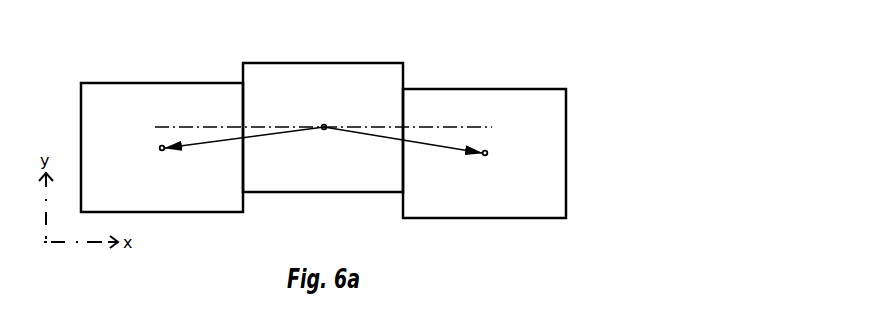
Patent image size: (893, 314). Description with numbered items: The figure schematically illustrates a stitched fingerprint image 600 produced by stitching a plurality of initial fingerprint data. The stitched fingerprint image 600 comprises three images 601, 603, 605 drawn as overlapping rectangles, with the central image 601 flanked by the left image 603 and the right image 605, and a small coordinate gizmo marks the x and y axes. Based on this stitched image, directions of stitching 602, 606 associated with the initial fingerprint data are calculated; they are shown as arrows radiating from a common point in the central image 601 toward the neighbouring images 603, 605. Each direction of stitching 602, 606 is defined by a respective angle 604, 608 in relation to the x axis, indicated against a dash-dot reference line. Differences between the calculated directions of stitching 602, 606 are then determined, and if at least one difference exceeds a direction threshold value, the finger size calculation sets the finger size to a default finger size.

The stitched fingerprint image 600 is at (453, 42).
The image 601 is at (243, 72).
The direction of stitching 602 is at (197, 144).
The image 603 is at (81, 103).
The angle 604 is at (217, 141).
The image 605 is at (495, 89).
The direction of stitching 606 is at (440, 146).
The angle 608 is at (432, 144).